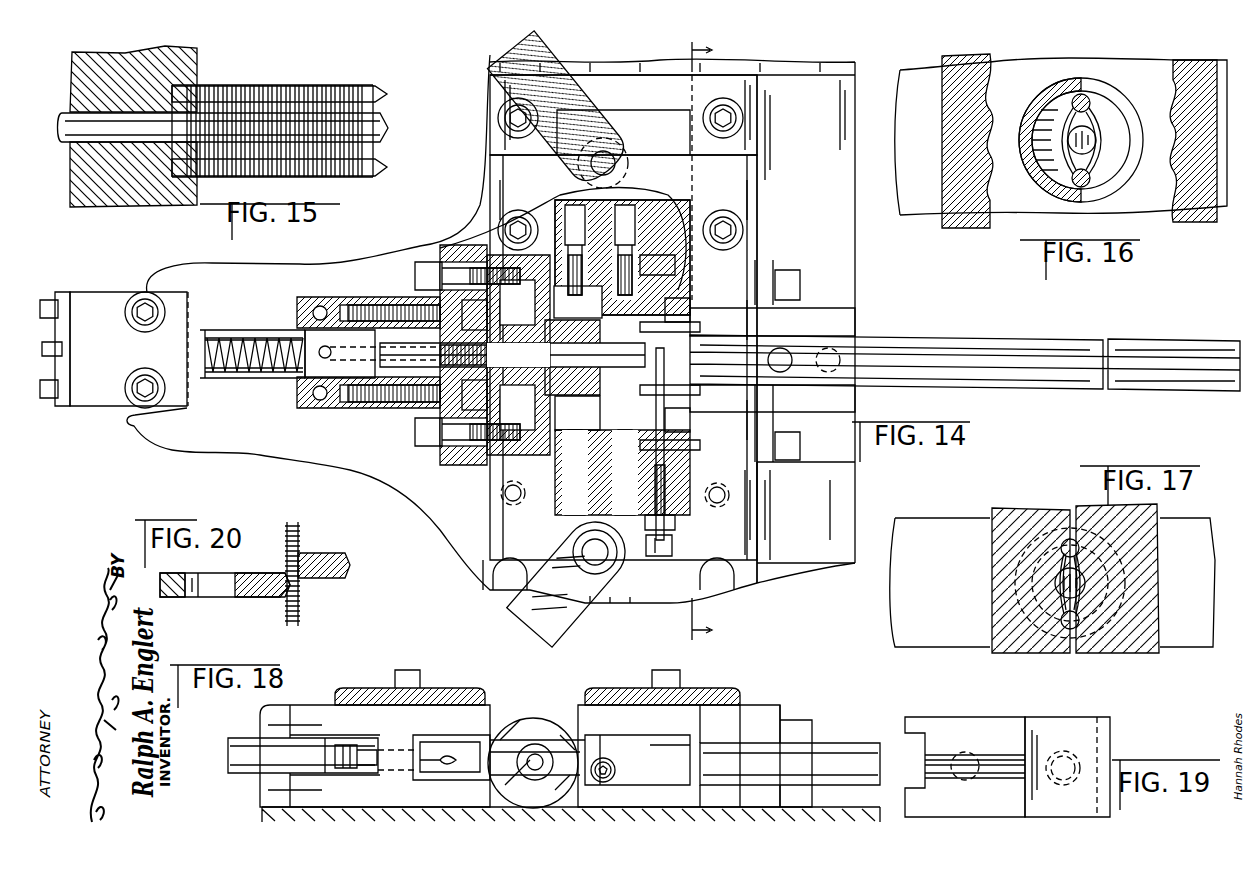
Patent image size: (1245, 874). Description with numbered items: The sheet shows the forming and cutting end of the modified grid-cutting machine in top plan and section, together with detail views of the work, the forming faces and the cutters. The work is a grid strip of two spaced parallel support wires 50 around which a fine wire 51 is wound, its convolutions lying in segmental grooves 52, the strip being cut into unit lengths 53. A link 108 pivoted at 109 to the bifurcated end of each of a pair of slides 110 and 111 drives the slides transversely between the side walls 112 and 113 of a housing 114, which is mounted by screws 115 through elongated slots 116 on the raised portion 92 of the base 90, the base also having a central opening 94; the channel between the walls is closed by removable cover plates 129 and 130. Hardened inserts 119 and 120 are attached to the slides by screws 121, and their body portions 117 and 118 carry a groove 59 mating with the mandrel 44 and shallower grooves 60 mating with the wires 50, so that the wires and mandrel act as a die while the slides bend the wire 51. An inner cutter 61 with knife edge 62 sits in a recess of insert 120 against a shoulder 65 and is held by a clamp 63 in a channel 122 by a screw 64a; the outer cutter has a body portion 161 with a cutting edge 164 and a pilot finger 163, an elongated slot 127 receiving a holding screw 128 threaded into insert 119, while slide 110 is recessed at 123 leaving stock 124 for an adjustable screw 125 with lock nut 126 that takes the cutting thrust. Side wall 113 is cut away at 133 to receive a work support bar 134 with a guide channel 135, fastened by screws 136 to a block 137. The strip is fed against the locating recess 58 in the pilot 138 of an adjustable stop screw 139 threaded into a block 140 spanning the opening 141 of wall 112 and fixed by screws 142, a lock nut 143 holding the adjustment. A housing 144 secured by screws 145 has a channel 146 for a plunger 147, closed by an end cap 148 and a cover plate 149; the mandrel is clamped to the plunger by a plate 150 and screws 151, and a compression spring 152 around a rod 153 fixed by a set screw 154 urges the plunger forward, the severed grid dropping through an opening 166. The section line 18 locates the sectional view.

In FIG. 14, the section line 18 is at (716, 340).
In FIG. 15, the mandrel 44 is at (388, 131).
In FIG. 16, the mandrel 44 is at (1096, 136).
In FIG. 17, the mandrel 44 is at (1058, 578).
In FIG. 14, the mandrel 44 is at (600, 356).
In FIG. 15, the support wires 50 is at (372, 86).
In FIG. 16, the support wires 50 is at (1090, 100).
In FIG. 17, the support wires 50 is at (1068, 540).
In FIG. 20, the support wires 50 is at (292, 522).
In FIG. 15, the fine wire 51 is at (376, 110).
In FIG. 16, the fine wire 51 is at (1062, 170).
In FIG. 17, the fine wire 51 is at (1082, 570).
In FIG. 20, the fine wire 51 is at (300, 545).
In FIG. 15, the segmental grooves 52 is at (352, 86).
In FIG. 17, the unit lengths 53 is at (1090, 590).
In FIG. 15, the locating recess 58 is at (185, 88).
In FIG. 16, the locating recess 58 is at (1058, 90).
In FIG. 17, the locating recess 58 is at (1100, 610).
In FIG. 18, the locating recess 58 is at (525, 768).
In FIG. 14, the locating recess 58 is at (600, 362).
In FIG. 16, the mandrel groove 59 is at (945, 140).
In FIG. 17, the mandrel groove 59 is at (1040, 590).
In FIG. 19, the mandrel groove 59 is at (955, 760).
In FIG. 14, the mandrel groove 59 is at (615, 318).
In FIG. 16, the support wire grooves 60 is at (988, 100).
In FIG. 17, the support wire grooves 60 is at (1078, 545).
In FIG. 19, the support wire grooves 60 is at (932, 755).
In FIG. 20, the inner cutter 61 is at (350, 566).
In FIG. 18, the inner cutter 61 is at (578, 710).
In FIG. 14, the inner cutter 61 is at (668, 320).
In FIG. 20, the knife edge 62 is at (302, 578).
In FIG. 14, the knife edge 62 is at (668, 345).
In FIG. 18, the clamp 63 is at (625, 765).
In FIG. 14, the clamp 63 is at (690, 240).
In FIG. 18, the screw 64a is at (610, 780).
In FIG. 14, the screw 64a is at (690, 288).
In FIG. 18, the shoulder 65 is at (650, 688).
In FIG. 14, the base 90 is at (305, 268).
In FIG. 14, the raised portion 92 is at (857, 296).
In FIG. 14, the central opening 94 is at (128, 422).
In FIG. 18, the link 108 is at (232, 740).
In FIG. 14, the link 108 is at (495, 66).
In FIG. 18, the pivotal connection 109 is at (270, 792).
In FIG. 14, the pivotal connection 109 is at (603, 150).
In FIG. 18, the slide 110 is at (312, 705).
In FIG. 14, the slide 110 is at (560, 520).
In FIG. 18, the slide 111 is at (722, 715).
In FIG. 14, the slide 111 is at (655, 215).
In FIG. 18, the side wall 112 is at (812, 722).
In FIG. 14, the side wall 112 is at (483, 565).
In FIG. 14, the side wall 113 is at (745, 542).
In FIG. 18, the housing 114 is at (800, 820).
In FIG. 14, the housing 114 is at (760, 138).
In FIG. 14, the screws 115 is at (740, 124).
In FIG. 14, the elongated slots 116 is at (735, 110).
In FIG. 19, the body portion 117 is at (995, 727).
In FIG. 14, the body portion 117 is at (610, 400).
In FIG. 14, the body portion 118 is at (600, 304).
In FIG. 19, the hardened insert 119 is at (1048, 725).
In FIG. 18, the hardened insert 119 is at (465, 780).
In FIG. 14, the hardened insert 119 is at (690, 445).
In FIG. 18, the hardened insert 120 is at (622, 748).
In FIG. 14, the hardened insert 120 is at (650, 258).
In FIG. 14, the screws 121 is at (565, 215).
In FIG. 18, the channel 122 is at (705, 705).
In FIG. 14, the channel 122 is at (688, 285).
In FIG. 18, the recess 123 is at (452, 735).
In FIG. 14, the recess 123 is at (690, 418).
In FIG. 18, the stock 124 is at (388, 688).
In FIG. 14, the stock 124 is at (690, 505).
In FIG. 18, the adjustable screw 125 is at (333, 757).
In FIG. 14, the adjustable screw 125 is at (673, 548).
In FIG. 18, the lock nut 126 is at (355, 688).
In FIG. 14, the lock nut 126 is at (675, 525).
In FIG. 20, the elongated slot 127 is at (210, 590).
In FIG. 18, the elongated slot 127 is at (440, 765).
In FIG. 18, the holding screw 128 is at (510, 730).
In FIG. 14, the holding screw 128 is at (735, 410).
In FIG. 18, the cover plate 129 is at (428, 688).
In FIG. 18, the cover plate 130 is at (608, 705).
In FIG. 14, the cover plate 130 is at (738, 193).
In FIG. 14, the cut-away portion 133 is at (760, 325).
In FIG. 14, the work support bar 134 is at (978, 340).
In FIG. 14, the channel 135 is at (1040, 358).
In FIG. 14, the screws 136 is at (840, 355).
In FIG. 14, the block 137 is at (857, 400).
In FIG. 18, the pilot 138 is at (520, 805).
In FIG. 14, the pilot 138 is at (560, 335).
In FIG. 18, the adjustable stop screw 139 is at (550, 745).
In FIG. 14, the adjustable stop screw 139 is at (622, 461).
In FIG. 18, the block 140 is at (522, 720).
In FIG. 14, the block 140 is at (440, 255).
In FIG. 18, the central opening 141 is at (578, 700).
In FIG. 14, the central opening 141 is at (500, 450).
In FIG. 14, the screws 142 is at (418, 273).
In FIG. 14, the lock nut 143 is at (430, 446).
In FIG. 14, the housing 144 is at (290, 286).
In FIG. 14, the screws 145 is at (380, 302).
In FIG. 14, the channel 146 is at (245, 330).
In FIG. 14, the plunger 147 is at (300, 398).
In FIG. 14, the end cap 148 is at (70, 292).
In FIG. 14, the cover plate 149 is at (108, 300).
In FIG. 14, the clamp plate 150 is at (390, 410).
In FIG. 14, the screws 151 is at (370, 410).
In FIG. 14, the compression spring 152 is at (270, 372).
In FIG. 14, the rod 153 is at (225, 335).
In FIG. 14, the set screw 154 is at (320, 380).
In FIG. 20, the cutter body portion 161 is at (265, 573).
In FIG. 18, the cutter body portion 161 is at (470, 740).
In FIG. 14, the cutter body portion 161 is at (690, 456).
In FIG. 18, the pilot finger 163 is at (498, 705).
In FIG. 14, the pilot finger 163 is at (670, 340).
In FIG. 20, the cutting edge 164 is at (275, 598).
In FIG. 18, the cutting edge 164 is at (540, 745).
In FIG. 14, the cutting edge 164 is at (672, 390).
In FIG. 18, the discharge opening 166 is at (585, 815).
In FIG. 14, the discharge opening 166 is at (700, 312).